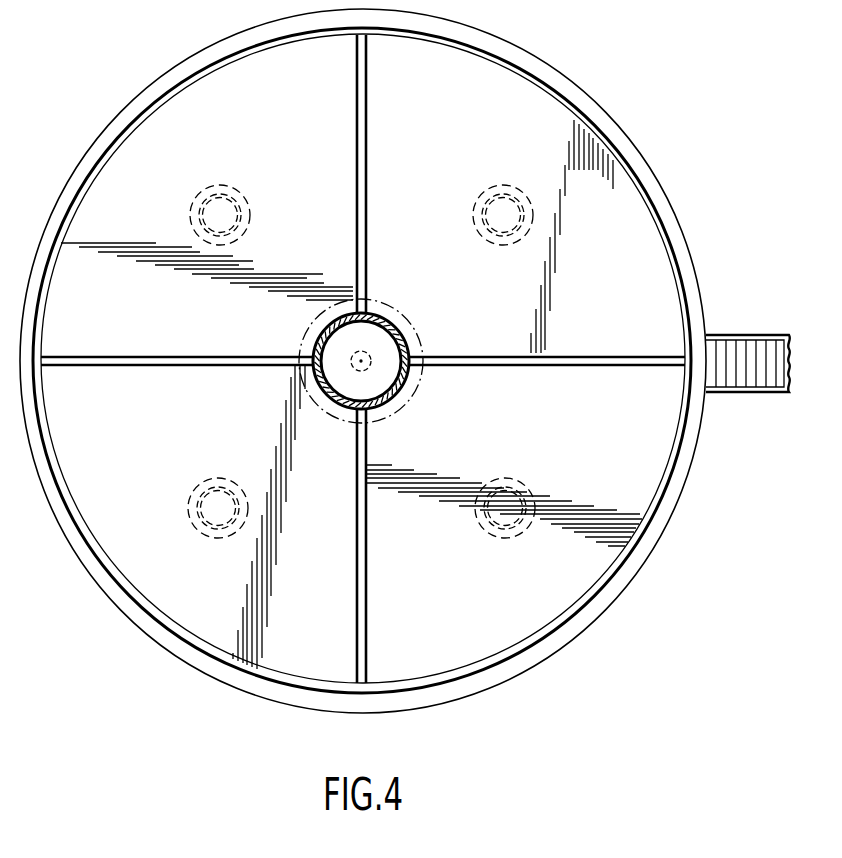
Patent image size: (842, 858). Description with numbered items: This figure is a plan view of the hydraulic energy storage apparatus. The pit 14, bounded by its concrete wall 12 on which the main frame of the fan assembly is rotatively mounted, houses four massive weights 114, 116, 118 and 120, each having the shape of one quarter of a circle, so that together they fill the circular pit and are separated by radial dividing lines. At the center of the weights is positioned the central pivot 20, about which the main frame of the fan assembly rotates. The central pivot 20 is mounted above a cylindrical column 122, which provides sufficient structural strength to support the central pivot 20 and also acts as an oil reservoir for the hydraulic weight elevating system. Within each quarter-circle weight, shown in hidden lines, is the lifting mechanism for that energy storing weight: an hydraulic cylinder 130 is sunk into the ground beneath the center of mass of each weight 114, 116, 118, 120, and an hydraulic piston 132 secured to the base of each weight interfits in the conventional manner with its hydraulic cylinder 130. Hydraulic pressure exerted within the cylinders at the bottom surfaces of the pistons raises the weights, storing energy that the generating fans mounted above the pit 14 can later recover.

The concrete wall 12 is at (606, 114).
The pit 14 is at (634, 168).
The central pivot 20 is at (353, 355).
The weight 114 is at (463, 299).
The weight 116 is at (536, 429).
The weight 118 is at (178, 424).
The weight 120 is at (181, 313).
The cylindrical column 122 is at (395, 395).
The hydraulic cylinder 130 is at (207, 188).
The hydraulic piston 132 is at (236, 203).